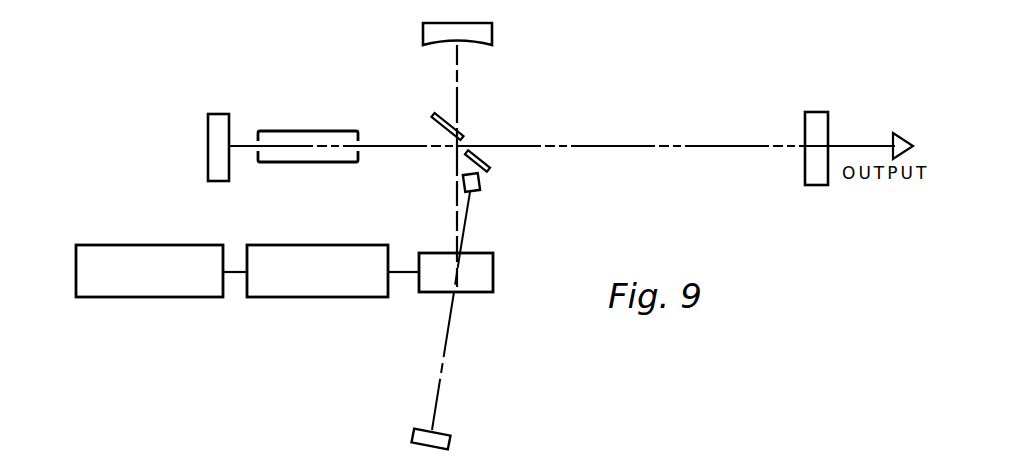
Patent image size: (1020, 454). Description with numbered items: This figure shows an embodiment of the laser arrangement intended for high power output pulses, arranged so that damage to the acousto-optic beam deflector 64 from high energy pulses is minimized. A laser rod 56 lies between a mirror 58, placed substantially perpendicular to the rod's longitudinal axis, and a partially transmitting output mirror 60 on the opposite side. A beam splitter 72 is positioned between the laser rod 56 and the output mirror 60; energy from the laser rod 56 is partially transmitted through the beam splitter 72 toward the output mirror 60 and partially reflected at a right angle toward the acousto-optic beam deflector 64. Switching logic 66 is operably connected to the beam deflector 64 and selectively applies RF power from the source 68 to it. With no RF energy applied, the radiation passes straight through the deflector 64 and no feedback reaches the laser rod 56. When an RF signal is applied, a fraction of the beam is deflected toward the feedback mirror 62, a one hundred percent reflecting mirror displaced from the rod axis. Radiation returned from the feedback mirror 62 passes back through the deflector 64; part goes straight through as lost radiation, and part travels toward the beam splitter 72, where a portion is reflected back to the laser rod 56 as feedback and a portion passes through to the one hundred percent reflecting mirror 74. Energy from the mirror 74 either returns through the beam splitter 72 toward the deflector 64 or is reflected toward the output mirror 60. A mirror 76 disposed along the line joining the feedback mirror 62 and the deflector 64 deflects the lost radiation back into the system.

The laser rod 56 is at (318, 133).
The mirror 58 is at (220, 115).
The partially transmitting mirror 60 is at (813, 112).
The feedback mirror 62 is at (414, 432).
The acousto-optic beam deflector 64 is at (493, 277).
The switching logic 66 is at (305, 292).
The RF power source 68 is at (138, 290).
The beam splitter 72 is at (462, 134).
The 100 percent reflecting mirror 74 is at (492, 36).
The mirror 76 is at (481, 186).